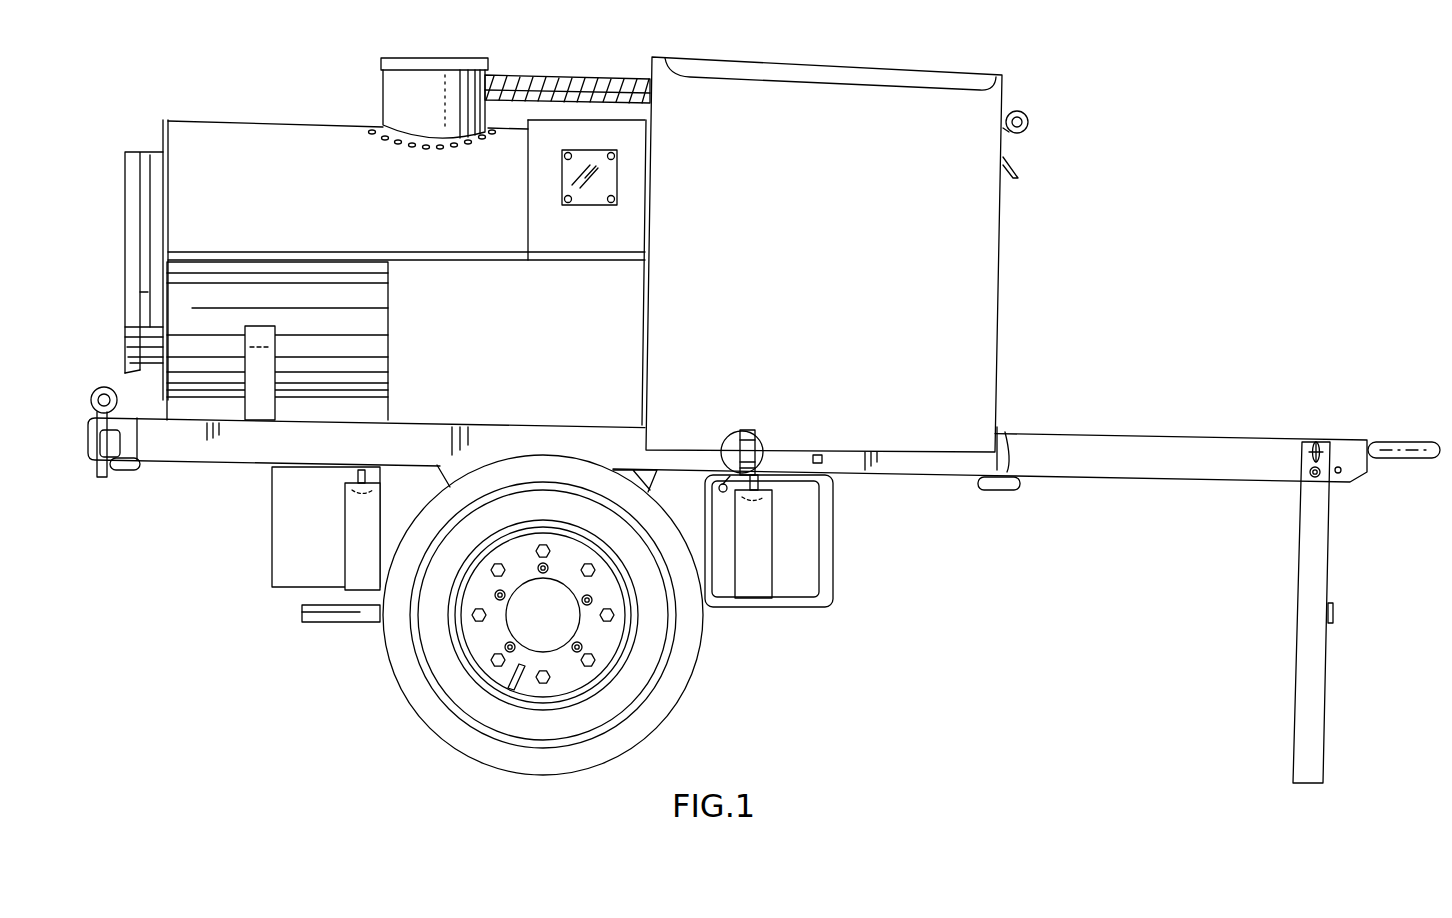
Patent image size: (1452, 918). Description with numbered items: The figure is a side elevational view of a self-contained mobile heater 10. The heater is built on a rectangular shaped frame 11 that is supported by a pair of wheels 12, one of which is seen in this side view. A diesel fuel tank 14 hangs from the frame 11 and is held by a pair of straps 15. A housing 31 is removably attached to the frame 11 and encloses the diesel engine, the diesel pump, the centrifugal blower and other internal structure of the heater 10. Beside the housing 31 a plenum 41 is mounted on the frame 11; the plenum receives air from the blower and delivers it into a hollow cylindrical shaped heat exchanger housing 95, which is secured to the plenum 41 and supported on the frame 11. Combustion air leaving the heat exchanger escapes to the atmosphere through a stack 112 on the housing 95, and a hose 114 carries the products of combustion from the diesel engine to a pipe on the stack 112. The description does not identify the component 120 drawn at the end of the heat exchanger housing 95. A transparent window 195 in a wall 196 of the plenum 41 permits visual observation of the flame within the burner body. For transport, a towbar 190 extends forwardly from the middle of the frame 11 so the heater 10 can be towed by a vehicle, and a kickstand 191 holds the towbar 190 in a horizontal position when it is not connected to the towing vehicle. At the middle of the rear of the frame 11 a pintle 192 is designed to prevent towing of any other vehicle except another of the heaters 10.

The mobile heater 10 is at (870, 610).
The frame 11 is at (180, 464).
The wheels 12 is at (682, 701).
The diesel fuel tank 14 is at (268, 567).
The straps 15 is at (350, 510).
The housing 31 is at (1005, 278).
The plenum 41 is at (598, 118).
The heat exchanger housing 95 is at (290, 122).
The stack 112 is at (380, 82).
The hose 114 is at (538, 75).
The flange 120 is at (123, 140).
The towbar 190 is at (1150, 437).
The kickstand 191 is at (1300, 572).
The pintle 192 is at (88, 408).
The transparent window 195 is at (615, 176).
The wall 196 is at (532, 198).